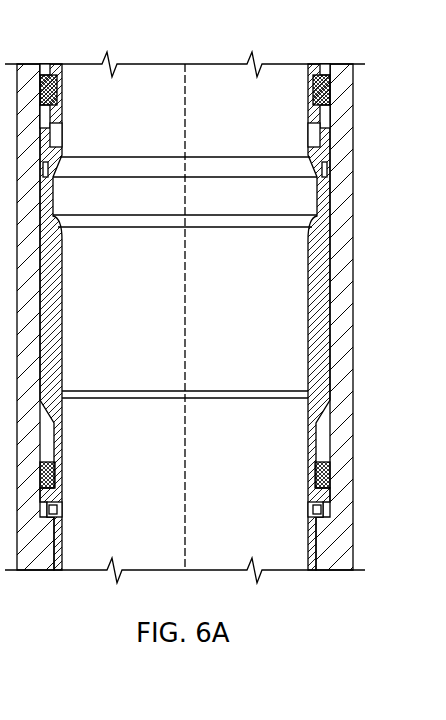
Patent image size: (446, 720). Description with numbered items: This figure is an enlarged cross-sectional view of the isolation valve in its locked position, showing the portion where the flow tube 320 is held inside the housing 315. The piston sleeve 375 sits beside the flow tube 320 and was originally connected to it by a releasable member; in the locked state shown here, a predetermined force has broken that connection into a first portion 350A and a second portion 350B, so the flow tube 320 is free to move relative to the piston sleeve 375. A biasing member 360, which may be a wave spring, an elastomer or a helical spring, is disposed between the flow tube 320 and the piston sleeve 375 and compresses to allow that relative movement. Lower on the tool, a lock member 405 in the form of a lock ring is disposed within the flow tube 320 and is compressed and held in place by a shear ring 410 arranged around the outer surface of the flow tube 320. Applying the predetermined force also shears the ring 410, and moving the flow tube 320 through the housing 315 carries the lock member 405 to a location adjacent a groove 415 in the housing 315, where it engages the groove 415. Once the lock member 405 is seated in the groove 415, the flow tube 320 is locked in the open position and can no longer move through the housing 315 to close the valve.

The housing 315 is at (338, 250).
The flow tube 320 is at (323, 312).
The first portion 350A is at (323, 172).
The second portion 350B is at (316, 133).
The biasing member 360 is at (333, 88).
The piston sleeve 375 is at (313, 63).
The lock member 405 is at (312, 510).
The shear ring 410 is at (325, 480).
The groove 415 is at (312, 514).